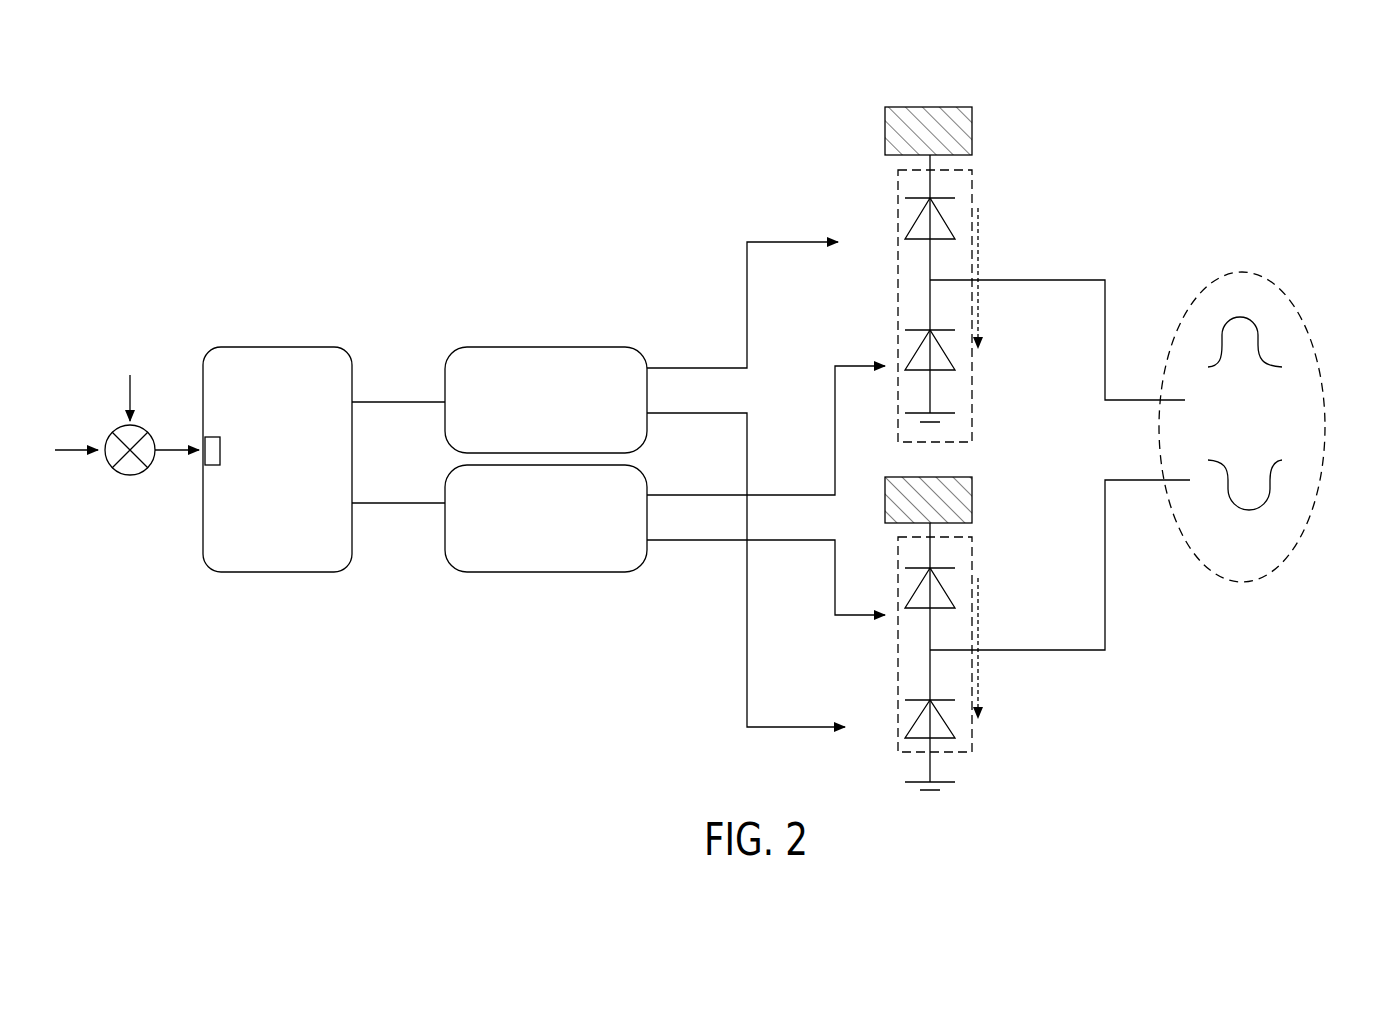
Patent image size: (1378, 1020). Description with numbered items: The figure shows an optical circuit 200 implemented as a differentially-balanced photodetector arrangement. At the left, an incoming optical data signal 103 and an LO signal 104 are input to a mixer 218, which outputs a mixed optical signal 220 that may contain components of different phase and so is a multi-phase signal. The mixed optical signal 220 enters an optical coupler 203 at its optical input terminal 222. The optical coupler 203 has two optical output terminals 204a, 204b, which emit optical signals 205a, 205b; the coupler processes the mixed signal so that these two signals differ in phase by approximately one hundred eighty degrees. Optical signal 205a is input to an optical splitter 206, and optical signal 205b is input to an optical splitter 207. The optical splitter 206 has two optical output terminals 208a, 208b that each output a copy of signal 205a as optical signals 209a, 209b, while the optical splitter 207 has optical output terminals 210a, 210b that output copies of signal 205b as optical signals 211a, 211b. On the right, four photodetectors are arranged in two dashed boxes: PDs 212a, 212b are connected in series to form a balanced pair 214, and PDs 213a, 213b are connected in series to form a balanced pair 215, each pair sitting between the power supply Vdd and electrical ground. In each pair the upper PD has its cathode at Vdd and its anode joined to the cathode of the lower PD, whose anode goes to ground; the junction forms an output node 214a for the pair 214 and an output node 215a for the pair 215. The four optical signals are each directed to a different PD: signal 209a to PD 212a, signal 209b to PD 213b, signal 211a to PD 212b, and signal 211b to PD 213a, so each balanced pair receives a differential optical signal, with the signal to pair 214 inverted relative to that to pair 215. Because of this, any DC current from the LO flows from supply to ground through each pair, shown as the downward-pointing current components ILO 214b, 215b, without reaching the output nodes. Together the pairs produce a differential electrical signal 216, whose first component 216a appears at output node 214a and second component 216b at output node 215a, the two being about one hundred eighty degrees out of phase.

The optical circuit 200 is at (192, 146).
The incoming optical data signal 103 is at (75, 462).
The LO signal 104 is at (125, 388).
The mixer 218 is at (130, 478).
The mixed optical signal 220 is at (168, 447).
The optical input terminal 222 is at (212, 437).
The optical coupler 203 is at (203, 545).
The optical output terminal 204a is at (352, 402).
The optical output terminal 204b is at (352, 503).
The optical signal 205a is at (403, 362).
The optical signal 205b is at (398, 540).
The optical splitter 206 is at (520, 347).
The optical splitter 207 is at (535, 572).
The optical output terminal 208a is at (647, 368).
The optical output terminal 208b is at (647, 413).
The optical output terminal 210a is at (647, 495).
The optical output terminal 210b is at (647, 540).
The optical signal 209a is at (702, 368).
The optical signal 209b is at (690, 413).
The optical signal 211a is at (710, 495).
The optical signal 211b is at (708, 540).
The balanced pair 214 is at (975, 176).
The photodetector 212a is at (937, 221).
The photodetector 212b is at (945, 365).
The output node 214a is at (945, 273).
The DC current component ILO 214b is at (1020, 310).
The balanced pair 215 is at (975, 544).
The photodetector 213a is at (937, 591).
The photodetector 213b is at (910, 735).
The output node 215a is at (945, 640).
The DC current component ILO 215b is at (1020, 678).
The differential electrical signal 216 is at (1292, 300).
The first component 216a is at (1222, 348).
The second component 216b is at (1236, 505).